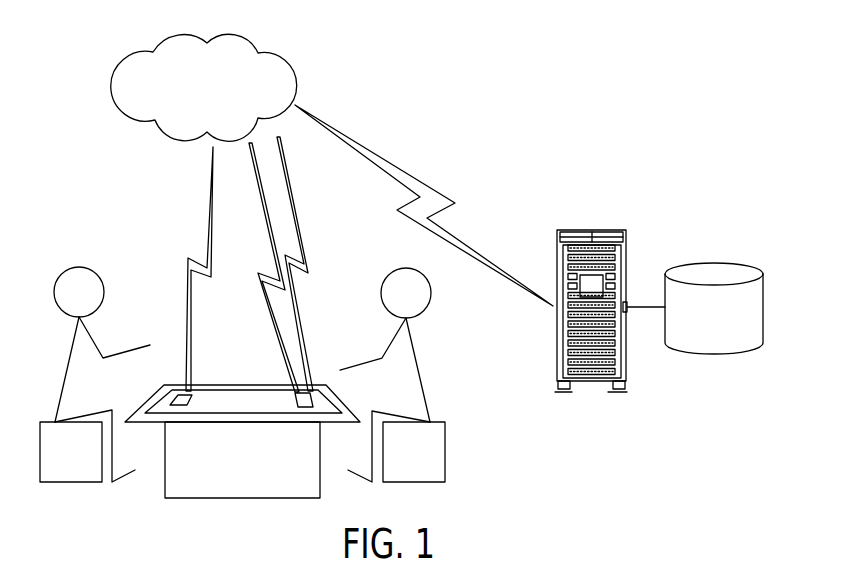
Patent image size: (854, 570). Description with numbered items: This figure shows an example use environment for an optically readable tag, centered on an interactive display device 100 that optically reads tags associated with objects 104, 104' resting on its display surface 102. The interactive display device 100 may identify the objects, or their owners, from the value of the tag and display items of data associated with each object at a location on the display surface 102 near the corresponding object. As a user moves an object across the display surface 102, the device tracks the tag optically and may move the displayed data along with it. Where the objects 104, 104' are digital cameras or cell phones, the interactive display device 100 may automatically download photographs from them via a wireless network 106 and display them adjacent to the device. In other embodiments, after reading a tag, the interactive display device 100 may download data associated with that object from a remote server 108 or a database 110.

The interactive display device 100 is at (256, 474).
The display surface 102 is at (192, 417).
The object 104 is at (157, 391).
The object 104' is at (332, 393).
The wireless network 106 is at (218, 98).
The remote server 108 is at (612, 230).
The database 110 is at (713, 263).